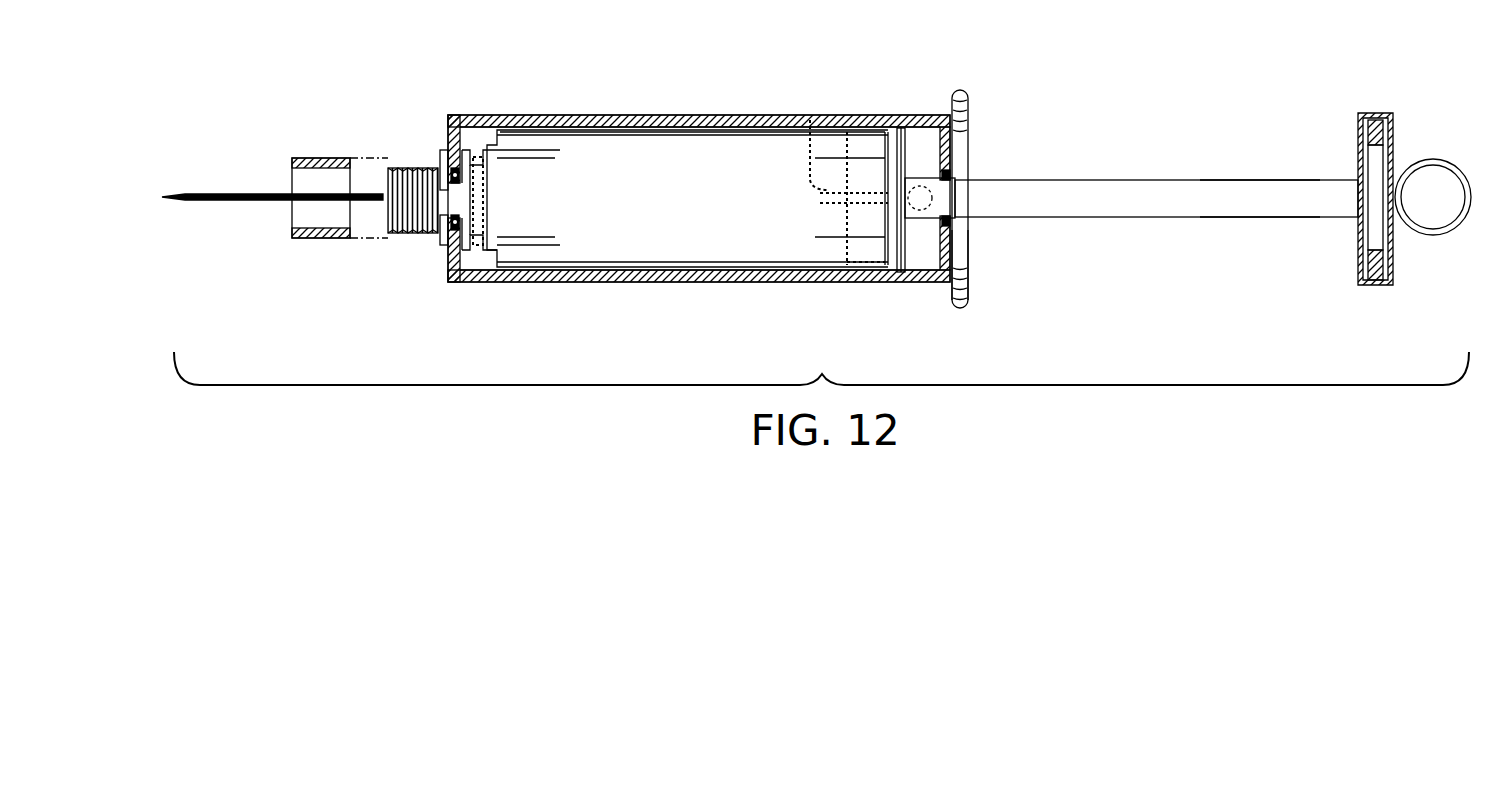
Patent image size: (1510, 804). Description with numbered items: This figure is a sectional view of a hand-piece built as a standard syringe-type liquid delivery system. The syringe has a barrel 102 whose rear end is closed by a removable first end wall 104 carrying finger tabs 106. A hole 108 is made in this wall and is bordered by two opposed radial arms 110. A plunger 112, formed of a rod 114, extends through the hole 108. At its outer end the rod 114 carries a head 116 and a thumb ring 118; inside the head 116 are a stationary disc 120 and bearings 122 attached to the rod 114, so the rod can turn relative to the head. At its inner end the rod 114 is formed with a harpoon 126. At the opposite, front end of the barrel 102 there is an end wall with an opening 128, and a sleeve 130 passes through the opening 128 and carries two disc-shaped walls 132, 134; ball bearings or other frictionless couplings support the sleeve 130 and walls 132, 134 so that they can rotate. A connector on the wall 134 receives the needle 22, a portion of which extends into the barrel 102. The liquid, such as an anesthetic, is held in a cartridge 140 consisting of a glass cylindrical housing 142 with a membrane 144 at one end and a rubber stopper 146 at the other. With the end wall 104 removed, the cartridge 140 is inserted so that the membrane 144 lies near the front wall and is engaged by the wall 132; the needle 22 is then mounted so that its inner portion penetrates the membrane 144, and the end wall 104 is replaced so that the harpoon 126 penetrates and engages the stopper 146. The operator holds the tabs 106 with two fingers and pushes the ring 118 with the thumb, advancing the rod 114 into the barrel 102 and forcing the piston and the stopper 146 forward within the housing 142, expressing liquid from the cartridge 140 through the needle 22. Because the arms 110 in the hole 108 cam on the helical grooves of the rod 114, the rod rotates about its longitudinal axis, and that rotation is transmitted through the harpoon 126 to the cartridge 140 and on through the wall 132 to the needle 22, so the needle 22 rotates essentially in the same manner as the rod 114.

The needle 22 is at (185, 195).
The barrel 102 is at (698, 283).
The first end wall 104 is at (976, 282).
The finger tabs 106 is at (968, 100).
The hole 108 is at (985, 202).
The radial arms 110 is at (963, 182).
The plunger 112 is at (1090, 168).
The rod 114 is at (1263, 168).
The head 116 is at (1392, 284).
The thumb ring 118 is at (1418, 160).
The stationary disc 120 is at (1366, 205).
The bearings 122 is at (1366, 135).
The harpoon 126 is at (812, 185).
The opening 128 is at (462, 195).
The sleeve 130 is at (446, 184).
The disc-shaped wall 132 is at (505, 245).
The disc-shaped wall 134 is at (440, 233).
The cartridge 140 is at (632, 150).
The glass cylindrical housing 142 is at (590, 127).
The membrane 144 is at (488, 150).
The rubber stopper 146 is at (870, 282).